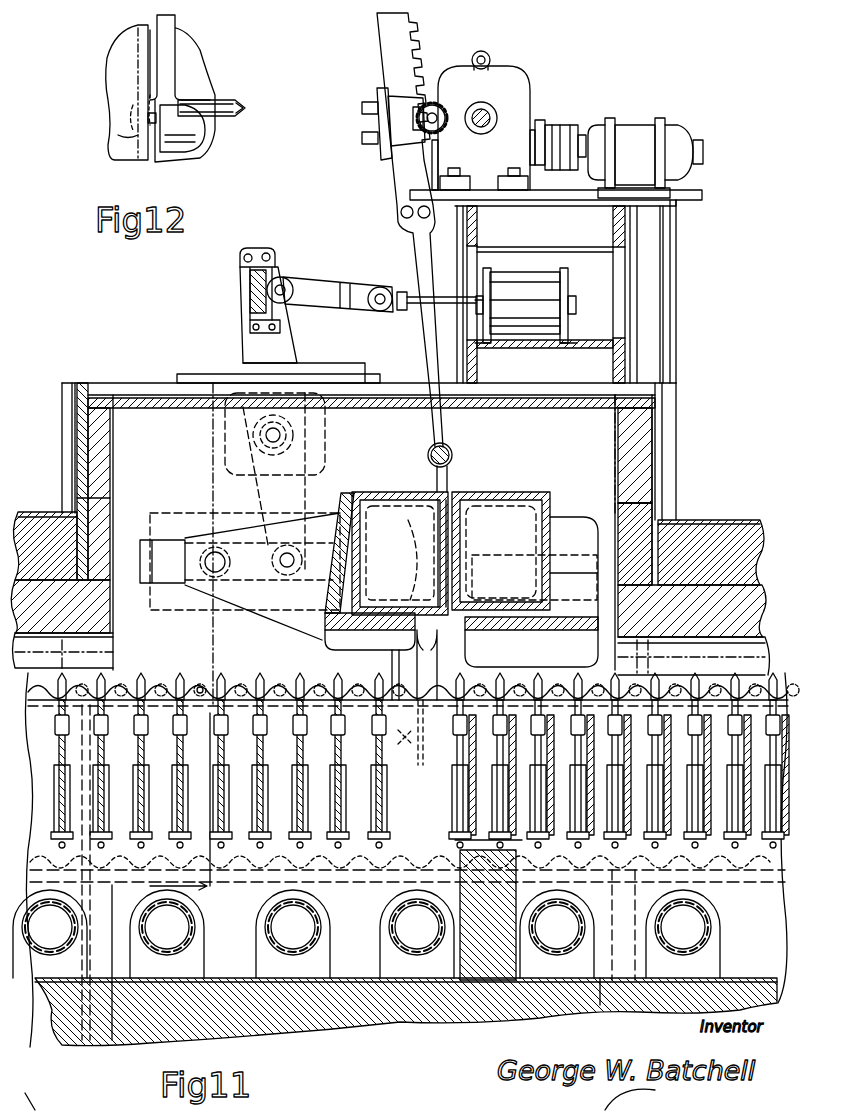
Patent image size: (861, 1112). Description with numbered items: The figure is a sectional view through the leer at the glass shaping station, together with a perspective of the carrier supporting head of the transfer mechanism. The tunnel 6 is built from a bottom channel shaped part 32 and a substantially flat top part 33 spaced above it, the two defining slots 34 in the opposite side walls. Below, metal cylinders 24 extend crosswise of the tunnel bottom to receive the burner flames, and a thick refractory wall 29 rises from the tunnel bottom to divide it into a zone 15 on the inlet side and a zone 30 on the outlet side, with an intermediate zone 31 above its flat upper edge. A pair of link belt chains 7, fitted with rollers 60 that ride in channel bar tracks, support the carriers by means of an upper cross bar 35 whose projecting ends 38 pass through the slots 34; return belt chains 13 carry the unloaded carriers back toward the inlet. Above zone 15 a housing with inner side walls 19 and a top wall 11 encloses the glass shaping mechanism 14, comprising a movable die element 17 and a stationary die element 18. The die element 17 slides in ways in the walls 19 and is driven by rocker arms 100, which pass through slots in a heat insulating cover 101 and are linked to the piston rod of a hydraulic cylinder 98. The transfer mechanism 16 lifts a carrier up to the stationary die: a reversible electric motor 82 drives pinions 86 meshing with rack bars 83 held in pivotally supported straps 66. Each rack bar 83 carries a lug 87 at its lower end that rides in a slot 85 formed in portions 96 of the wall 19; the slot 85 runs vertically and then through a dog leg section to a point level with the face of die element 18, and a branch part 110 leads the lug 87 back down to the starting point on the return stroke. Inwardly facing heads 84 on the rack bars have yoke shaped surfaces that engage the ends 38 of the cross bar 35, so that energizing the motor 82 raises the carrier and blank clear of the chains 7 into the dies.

In FIG. 11, the tunnel 6 is at (365, 958).
In FIG. 11, the link belt chains 7 is at (267, 676).
In FIG. 11, the top wall 11 is at (522, 407).
In FIG. 11, the return belt chains 13 is at (163, 618).
In FIG. 11, the glass shaping mechanism 14 is at (570, 503).
In FIG. 11, the zone 15 is at (137, 445).
In FIG. 11, the transfer mechanism 16 is at (497, 110).
In FIG. 11, the die element 17 is at (372, 507).
In FIG. 11, the die element 18 is at (527, 510).
In FIG. 12, the inner side walls 19 is at (123, 70).
In FIG. 11, the inner side walls 19 is at (588, 457).
In FIG. 11, the metal cylinders 24 is at (196, 915).
In FIG. 11, the wall 29 is at (493, 900).
In FIG. 11, the zone 30 is at (605, 957).
In FIG. 11, the intermediate zone 31 is at (482, 841).
In FIG. 11, the bottom channel shaped part 32 is at (330, 1010).
In FIG. 11, the top part 33 is at (43, 550).
In FIG. 11, the slots 34 is at (700, 673).
In FIG. 12, the cross bar 35 is at (242, 102).
In FIG. 11, the cross bar 35 is at (430, 453).
In FIG. 12, the projecting ends 38 is at (212, 97).
In FIG. 11, the rollers 60 is at (200, 672).
In FIG. 11, the straps 66 is at (400, 130).
In FIG. 11, the reversible electric motor 82 is at (630, 147).
In FIG. 12, the rack bar 83 is at (168, 52).
In FIG. 11, the rack bar 83 is at (395, 70).
In FIG. 12, the heads 84 is at (193, 132).
In FIG. 11, the heads 84 is at (453, 468).
In FIG. 12, the slot 85 is at (147, 80).
In FIG. 11, the slot 85 is at (427, 478).
In FIG. 11, the pinions 86 is at (433, 97).
In FIG. 12, the lug 87 is at (133, 113).
In FIG. 12, the portions of the wall 96 is at (127, 138).
In FIG. 11, the portions of the wall 96 is at (446, 482).
In FIG. 11, the cylinder 98 is at (530, 292).
In FIG. 11, the rocker arms 100 is at (270, 350).
In FIG. 11, the heat insulating cover 101 is at (316, 373).
In FIG. 11, the branch part 110 is at (433, 657).